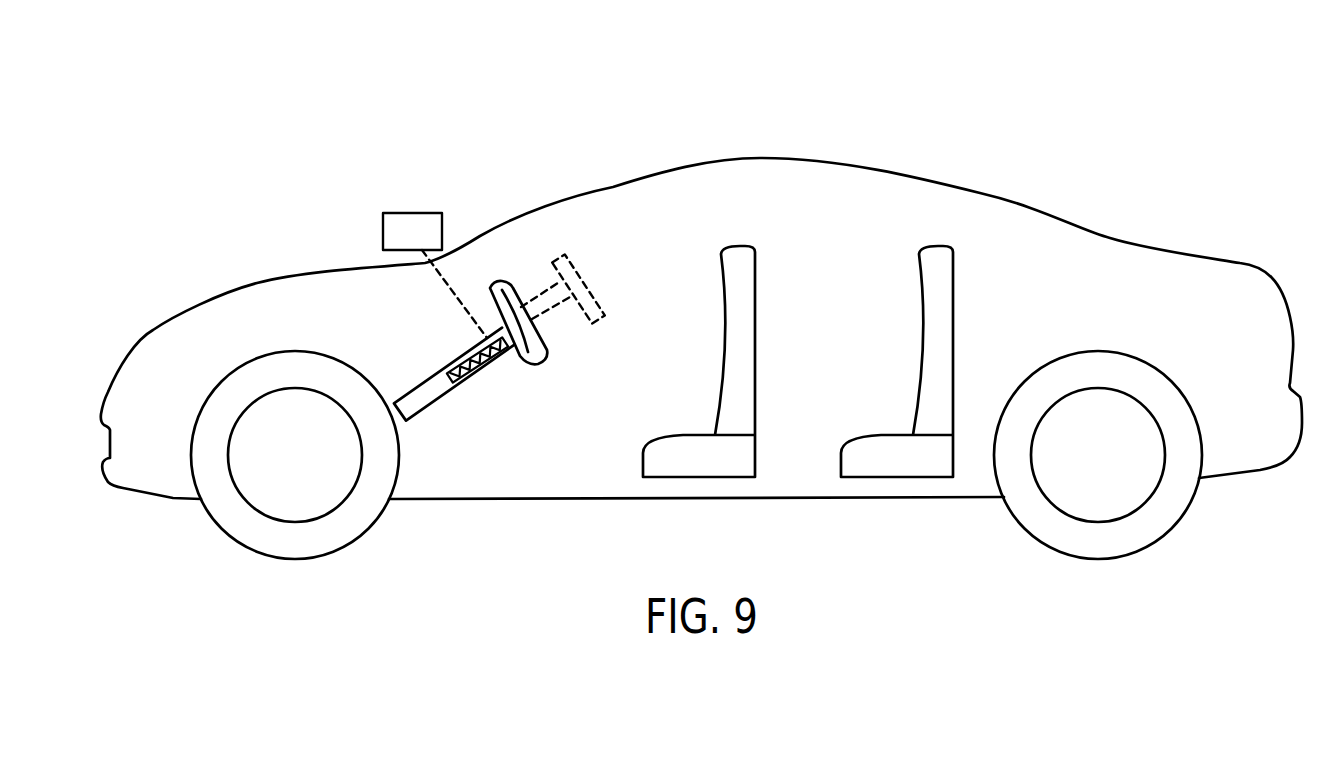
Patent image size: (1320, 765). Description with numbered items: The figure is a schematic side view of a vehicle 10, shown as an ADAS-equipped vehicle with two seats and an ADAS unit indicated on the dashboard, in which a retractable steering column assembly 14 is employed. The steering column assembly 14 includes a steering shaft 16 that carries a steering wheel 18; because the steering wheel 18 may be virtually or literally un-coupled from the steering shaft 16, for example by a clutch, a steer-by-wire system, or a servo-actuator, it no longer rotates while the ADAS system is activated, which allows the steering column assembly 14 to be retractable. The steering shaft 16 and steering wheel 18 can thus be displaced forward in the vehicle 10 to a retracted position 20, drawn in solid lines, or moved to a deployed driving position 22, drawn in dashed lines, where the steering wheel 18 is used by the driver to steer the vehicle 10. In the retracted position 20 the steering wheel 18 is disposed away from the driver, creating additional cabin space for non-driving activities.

The vehicle 10 is at (1120, 119).
The steering column assembly 14 is at (516, 309).
The steering shaft 16 is at (430, 372).
The steering wheel 18 is at (518, 296).
The retracted position 20 is at (518, 233).
The driving position 22 is at (613, 274).